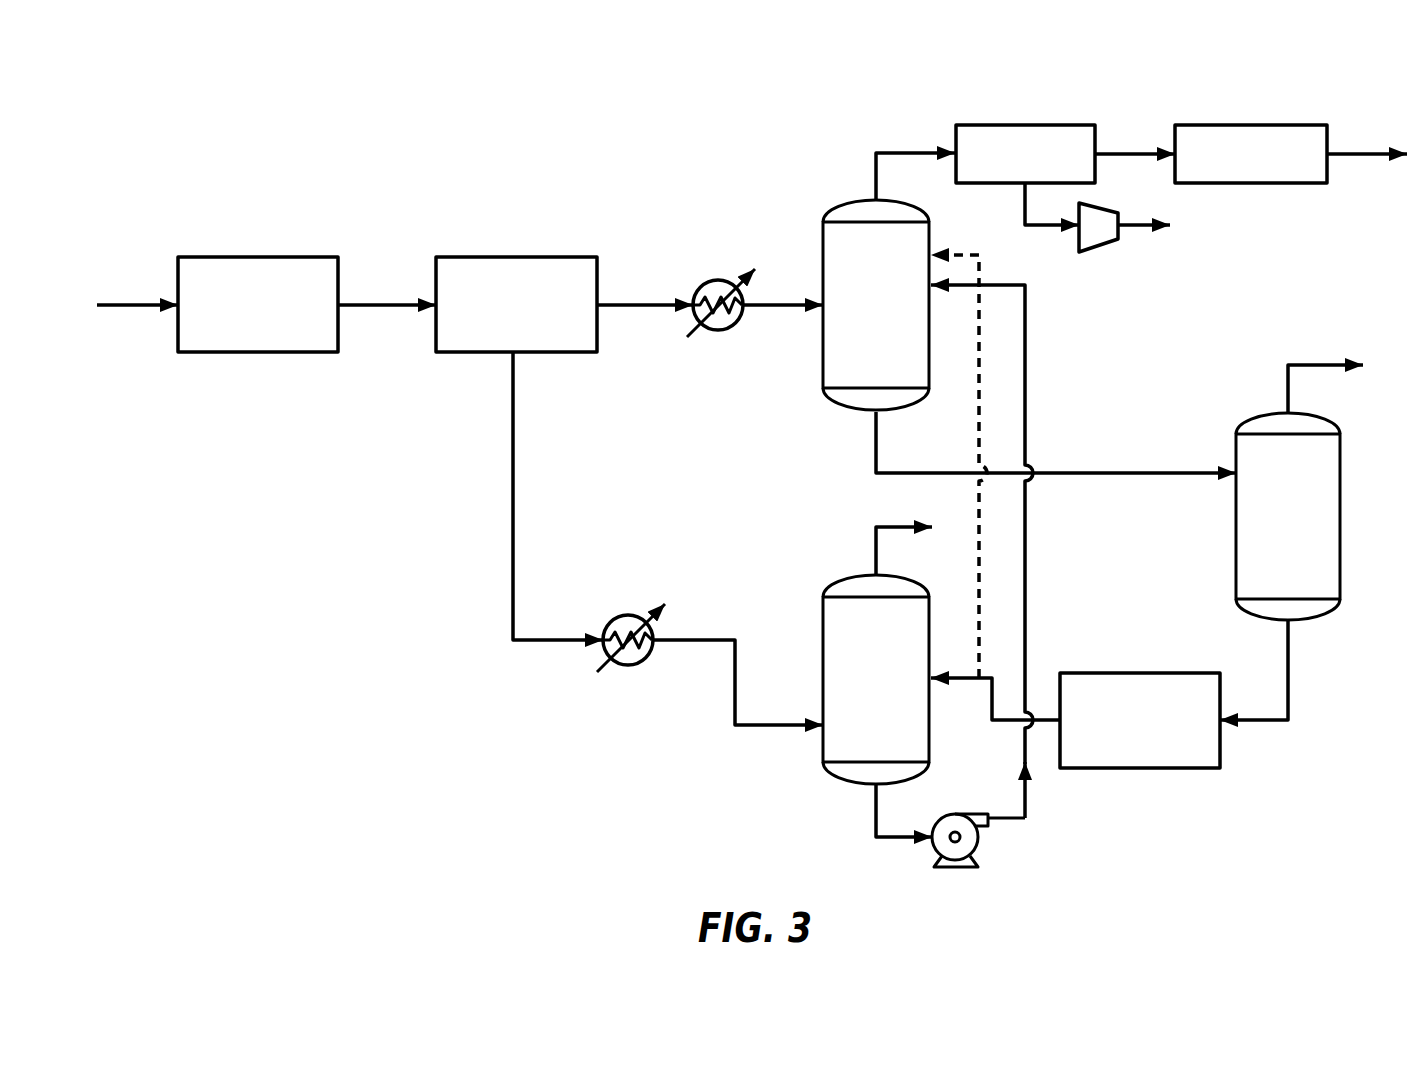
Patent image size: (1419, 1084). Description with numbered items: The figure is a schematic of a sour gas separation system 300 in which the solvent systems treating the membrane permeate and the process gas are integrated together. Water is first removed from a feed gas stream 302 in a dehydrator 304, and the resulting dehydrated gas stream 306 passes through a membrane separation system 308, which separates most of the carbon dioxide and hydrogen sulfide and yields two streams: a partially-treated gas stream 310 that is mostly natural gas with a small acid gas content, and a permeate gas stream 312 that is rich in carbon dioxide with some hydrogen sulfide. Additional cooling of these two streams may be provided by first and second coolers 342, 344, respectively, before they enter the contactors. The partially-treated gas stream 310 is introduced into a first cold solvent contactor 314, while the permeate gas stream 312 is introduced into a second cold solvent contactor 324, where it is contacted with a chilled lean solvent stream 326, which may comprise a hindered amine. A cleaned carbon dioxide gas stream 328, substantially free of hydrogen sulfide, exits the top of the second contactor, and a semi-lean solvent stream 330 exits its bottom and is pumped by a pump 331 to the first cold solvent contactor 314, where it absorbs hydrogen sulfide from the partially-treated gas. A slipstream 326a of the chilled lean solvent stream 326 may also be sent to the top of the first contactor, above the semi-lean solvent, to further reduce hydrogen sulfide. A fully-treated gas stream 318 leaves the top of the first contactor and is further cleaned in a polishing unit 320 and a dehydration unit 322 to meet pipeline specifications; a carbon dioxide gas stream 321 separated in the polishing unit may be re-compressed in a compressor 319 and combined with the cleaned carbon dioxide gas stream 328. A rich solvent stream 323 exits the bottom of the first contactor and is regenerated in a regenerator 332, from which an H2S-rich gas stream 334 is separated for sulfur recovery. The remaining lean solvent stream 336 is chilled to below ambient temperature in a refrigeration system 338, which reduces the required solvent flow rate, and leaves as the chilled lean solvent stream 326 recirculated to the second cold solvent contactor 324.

The sour gas separation system 300 is at (220, 83).
The feed gas stream 302 is at (128, 303).
The dehydrator 304 is at (286, 257).
The dehydrated gas stream 306 is at (382, 303).
The membrane separation system 308 is at (541, 257).
The partially-treated gas stream 310 is at (630, 303).
The permeate gas stream 312 is at (513, 507).
The first cold solvent contactor 314 is at (823, 237).
The fully-treated gas stream 318 is at (876, 167).
The compressor 319 is at (1102, 246).
The polishing unit 320 is at (1043, 125).
The carbon dioxide gas stream 321 is at (1025, 203).
The dehydration unit 322 is at (1275, 125).
The rich solvent stream 323 is at (1131, 469).
The second cold solvent contactor 324 is at (823, 604).
The chilled lean solvent stream 326 is at (1008, 722).
The slipstream 326a is at (979, 448).
The cleaned CO2 gas stream 328 is at (876, 540).
The semi-lean solvent stream 330 is at (890, 842).
The pump 331 is at (968, 868).
The regenerator 332 is at (1372, 438).
The H2S-rich gas stream 334 is at (1288, 380).
The lean solvent stream 336 is at (1290, 652).
The refrigeration system 338 is at (1175, 673).
The first cooler 342 is at (737, 328).
The second cooler 344 is at (647, 668).